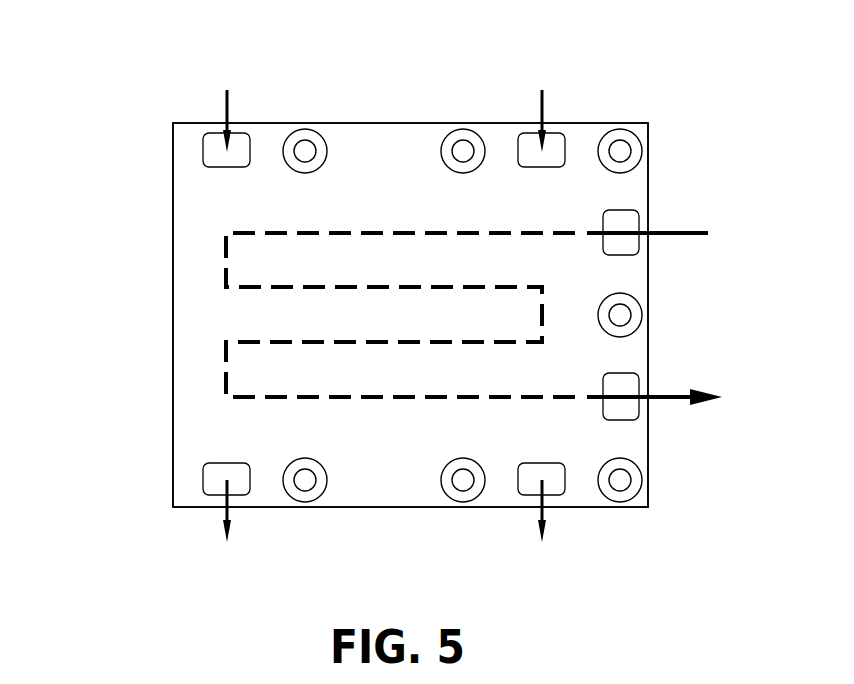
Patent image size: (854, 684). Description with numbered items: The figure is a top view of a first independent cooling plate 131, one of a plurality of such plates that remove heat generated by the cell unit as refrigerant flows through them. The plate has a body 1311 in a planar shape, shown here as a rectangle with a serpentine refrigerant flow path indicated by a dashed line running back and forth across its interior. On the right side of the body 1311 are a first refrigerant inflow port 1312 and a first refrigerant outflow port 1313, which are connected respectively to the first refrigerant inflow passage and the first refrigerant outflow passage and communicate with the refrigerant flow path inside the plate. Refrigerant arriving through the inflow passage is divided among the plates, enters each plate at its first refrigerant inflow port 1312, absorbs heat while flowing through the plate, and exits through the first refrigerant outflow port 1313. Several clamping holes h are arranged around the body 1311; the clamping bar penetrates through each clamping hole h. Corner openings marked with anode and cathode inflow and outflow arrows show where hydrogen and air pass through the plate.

The first independent cooling plate 131 is at (188, 113).
The body 1311 is at (585, 130).
The first refrigerant inflow port 1312 is at (618, 228).
The first refrigerant outflow port 1313 is at (618, 405).
The clamping hole h is at (622, 480).